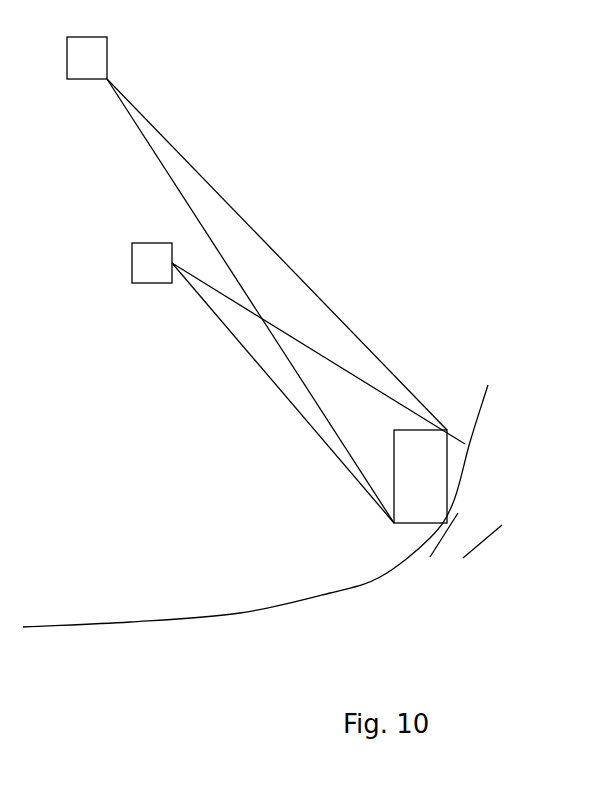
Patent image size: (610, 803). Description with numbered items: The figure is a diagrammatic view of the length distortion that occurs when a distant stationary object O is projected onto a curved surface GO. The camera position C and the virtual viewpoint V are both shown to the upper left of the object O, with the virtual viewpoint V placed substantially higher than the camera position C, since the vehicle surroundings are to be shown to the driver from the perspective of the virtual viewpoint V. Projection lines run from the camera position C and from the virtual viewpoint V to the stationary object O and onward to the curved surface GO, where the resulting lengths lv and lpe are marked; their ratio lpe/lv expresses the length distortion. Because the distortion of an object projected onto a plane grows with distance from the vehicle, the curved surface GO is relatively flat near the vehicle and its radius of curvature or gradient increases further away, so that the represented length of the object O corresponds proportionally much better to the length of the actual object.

The virtual viewpoint V is at (257, 280).
The camera position C is at (298, 383).
The stationary object O is at (420, 476).
The curved surface GO is at (255, 506).
The represented length from the virtual viewpoint lv is at (495, 460).
The projected length of the object lpe is at (553, 487).